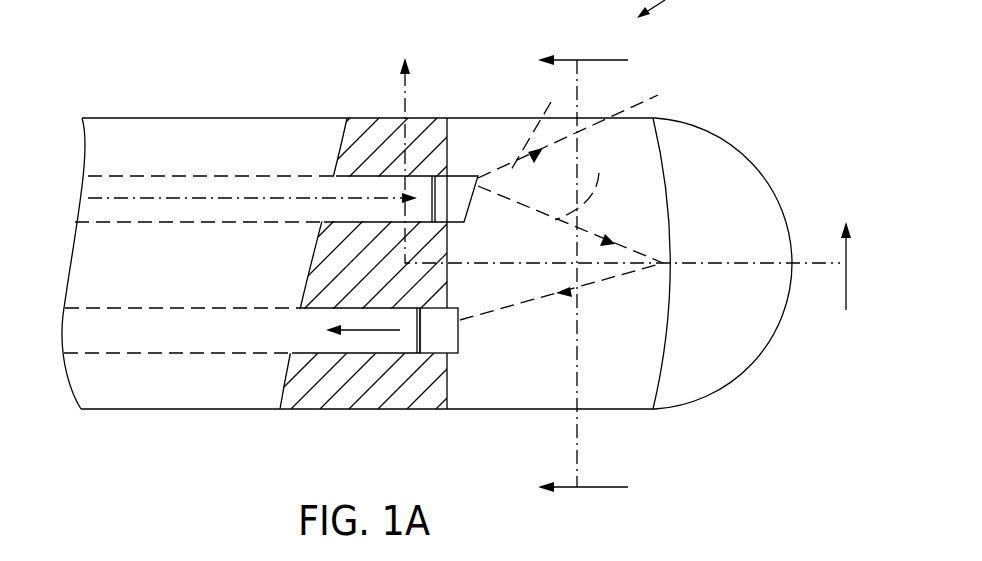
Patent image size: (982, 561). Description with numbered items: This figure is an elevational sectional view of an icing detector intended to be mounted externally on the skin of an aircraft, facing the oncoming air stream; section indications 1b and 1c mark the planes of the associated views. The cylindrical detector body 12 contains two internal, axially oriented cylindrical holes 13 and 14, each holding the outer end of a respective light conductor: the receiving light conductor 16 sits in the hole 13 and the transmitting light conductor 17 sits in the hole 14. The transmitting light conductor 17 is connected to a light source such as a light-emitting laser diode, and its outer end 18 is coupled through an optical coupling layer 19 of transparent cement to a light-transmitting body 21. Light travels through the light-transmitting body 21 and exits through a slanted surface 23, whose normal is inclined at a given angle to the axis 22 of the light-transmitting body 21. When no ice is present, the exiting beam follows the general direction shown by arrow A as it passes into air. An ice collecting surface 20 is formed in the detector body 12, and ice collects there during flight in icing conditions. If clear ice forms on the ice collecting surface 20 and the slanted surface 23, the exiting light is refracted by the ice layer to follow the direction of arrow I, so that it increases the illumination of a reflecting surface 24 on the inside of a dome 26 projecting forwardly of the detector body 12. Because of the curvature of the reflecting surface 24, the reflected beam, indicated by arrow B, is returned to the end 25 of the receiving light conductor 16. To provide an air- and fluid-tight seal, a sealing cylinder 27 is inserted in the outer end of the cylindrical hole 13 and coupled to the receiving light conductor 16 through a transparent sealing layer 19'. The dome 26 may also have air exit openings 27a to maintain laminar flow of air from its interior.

The detector body 12 is at (277, 116).
The cylindrical hole 13 is at (148, 353).
The cylindrical hole 14 is at (210, 222).
The receiving light conductor 16 is at (204, 343).
The transmitting light conductor 17 is at (139, 210).
The outer end 18 is at (466, 177).
The optical coupling layer 19 is at (479, 207).
The transparent sealing layer 19' is at (404, 383).
The ice collecting surface 20 is at (632, 367).
The light-transmitting body 21 is at (450, 187).
The axis 22 is at (242, 197).
The slanted surface 23 is at (478, 183).
The reflecting surface 24 is at (668, 240).
The end 25 is at (462, 312).
The dome 26 is at (783, 212).
The sealing cylinder 27 is at (450, 330).
The air exit openings 27a is at (622, 128).
The section line 1b is at (627, 189).
The section line 1c is at (597, 274).
The arrow A is at (535, 124).
The arrow B is at (592, 283).
The arrow I is at (579, 185).